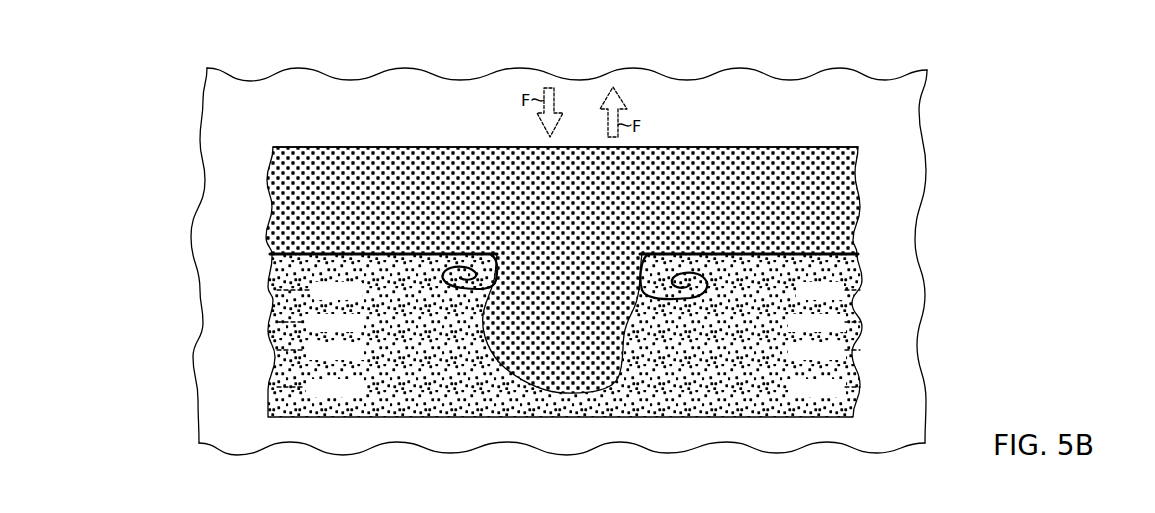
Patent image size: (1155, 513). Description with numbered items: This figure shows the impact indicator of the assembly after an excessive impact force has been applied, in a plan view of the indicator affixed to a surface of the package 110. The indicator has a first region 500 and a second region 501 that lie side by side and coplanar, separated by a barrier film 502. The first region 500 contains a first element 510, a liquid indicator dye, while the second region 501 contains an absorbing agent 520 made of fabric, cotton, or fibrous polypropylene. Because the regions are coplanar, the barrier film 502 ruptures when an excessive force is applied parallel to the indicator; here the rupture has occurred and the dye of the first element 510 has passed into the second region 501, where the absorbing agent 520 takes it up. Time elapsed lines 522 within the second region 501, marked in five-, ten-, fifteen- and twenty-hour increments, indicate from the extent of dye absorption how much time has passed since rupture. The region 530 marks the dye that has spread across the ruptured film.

The package 110 is at (781, 74).
The first region 500 is at (627, 299).
The second region 501 is at (628, 369).
The barrier film 502 is at (830, 252).
The first element 510 is at (627, 281).
The absorbing agent 520 is at (680, 403).
The time elapsed lines 522 is at (277, 290).
The infiltrated region 530 is at (580, 250).